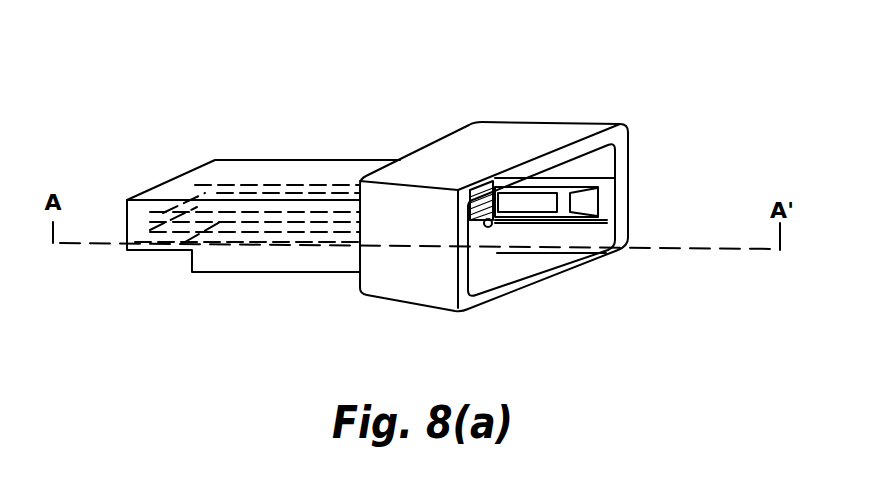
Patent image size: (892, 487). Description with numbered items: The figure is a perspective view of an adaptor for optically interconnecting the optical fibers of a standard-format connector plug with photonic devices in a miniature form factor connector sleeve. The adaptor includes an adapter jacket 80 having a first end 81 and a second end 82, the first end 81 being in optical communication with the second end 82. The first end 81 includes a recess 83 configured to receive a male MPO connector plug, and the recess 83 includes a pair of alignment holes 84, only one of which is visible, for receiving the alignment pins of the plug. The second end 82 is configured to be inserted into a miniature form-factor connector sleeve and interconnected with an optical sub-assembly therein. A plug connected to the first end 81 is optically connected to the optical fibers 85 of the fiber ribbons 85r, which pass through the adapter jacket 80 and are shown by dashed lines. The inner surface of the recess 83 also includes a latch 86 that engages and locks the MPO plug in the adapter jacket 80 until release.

The adapter jacket 80 is at (395, 82).
The first end 81 is at (630, 128).
The second end 82 is at (148, 192).
The recess 83 is at (510, 278).
The alignment holes 84 is at (498, 220).
The optical fibers 85 is at (490, 188).
The fiber ribbons 85r is at (230, 187).
The latch 86 is at (583, 203).